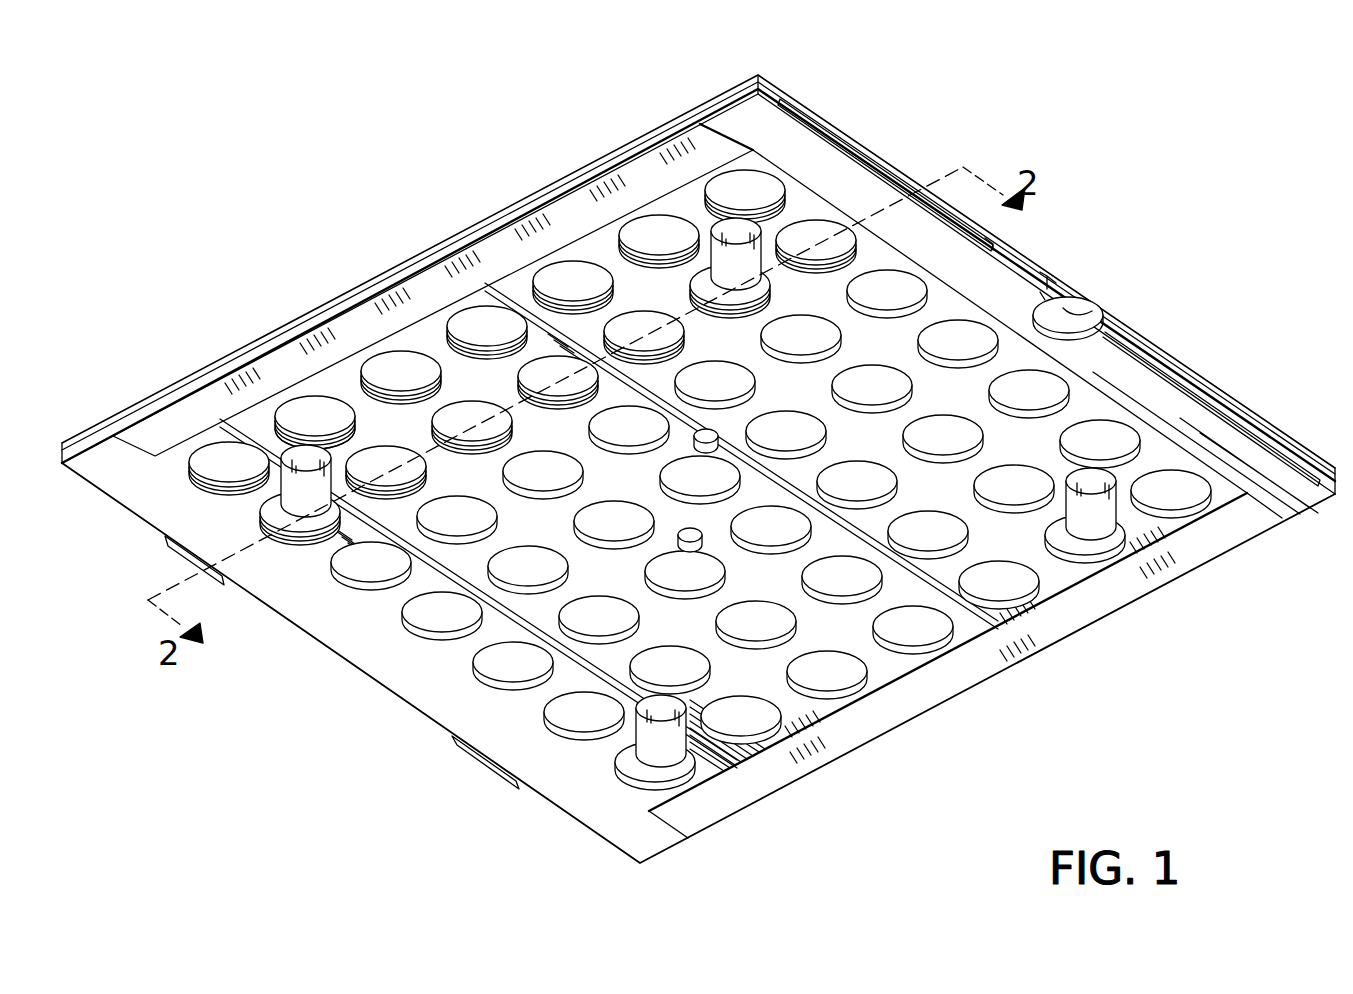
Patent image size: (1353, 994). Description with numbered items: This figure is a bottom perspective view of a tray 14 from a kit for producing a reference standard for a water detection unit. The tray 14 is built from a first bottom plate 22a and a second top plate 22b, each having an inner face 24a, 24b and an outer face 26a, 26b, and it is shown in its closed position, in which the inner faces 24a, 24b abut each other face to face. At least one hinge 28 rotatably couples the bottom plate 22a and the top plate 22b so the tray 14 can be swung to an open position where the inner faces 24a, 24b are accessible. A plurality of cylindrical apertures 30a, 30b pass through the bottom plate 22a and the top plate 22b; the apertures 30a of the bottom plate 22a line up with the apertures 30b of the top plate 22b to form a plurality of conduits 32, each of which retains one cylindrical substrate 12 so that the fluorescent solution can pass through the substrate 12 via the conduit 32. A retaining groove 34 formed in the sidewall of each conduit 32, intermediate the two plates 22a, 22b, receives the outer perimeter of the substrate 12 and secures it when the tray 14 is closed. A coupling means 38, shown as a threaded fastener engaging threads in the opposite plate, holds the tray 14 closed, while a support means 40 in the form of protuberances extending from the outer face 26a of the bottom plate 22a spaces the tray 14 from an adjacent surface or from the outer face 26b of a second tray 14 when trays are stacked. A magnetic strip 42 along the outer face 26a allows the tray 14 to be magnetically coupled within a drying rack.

The substrate 12 is at (802, 226).
The tray 14 is at (634, 144).
The first bottom plate 22a is at (1018, 263).
The second top plate 22b is at (1068, 286).
The inner face of the bottom plate 24a is at (1008, 250).
The inner face of the top plate 24b is at (1067, 308).
The outer face of the bottom plate 26a is at (1120, 378).
The outer face of the top plate 26b is at (900, 172).
The hinge 28 is at (190, 558).
The apertures of the bottom plate 30a is at (300, 441).
The apertures of the top plate 30b is at (322, 414).
The conduit 32 is at (468, 324).
The retaining groove 34 is at (298, 460).
The coupling means 38 is at (700, 440).
The support means 40 is at (722, 260).
The magnetic strip 42 is at (425, 293).